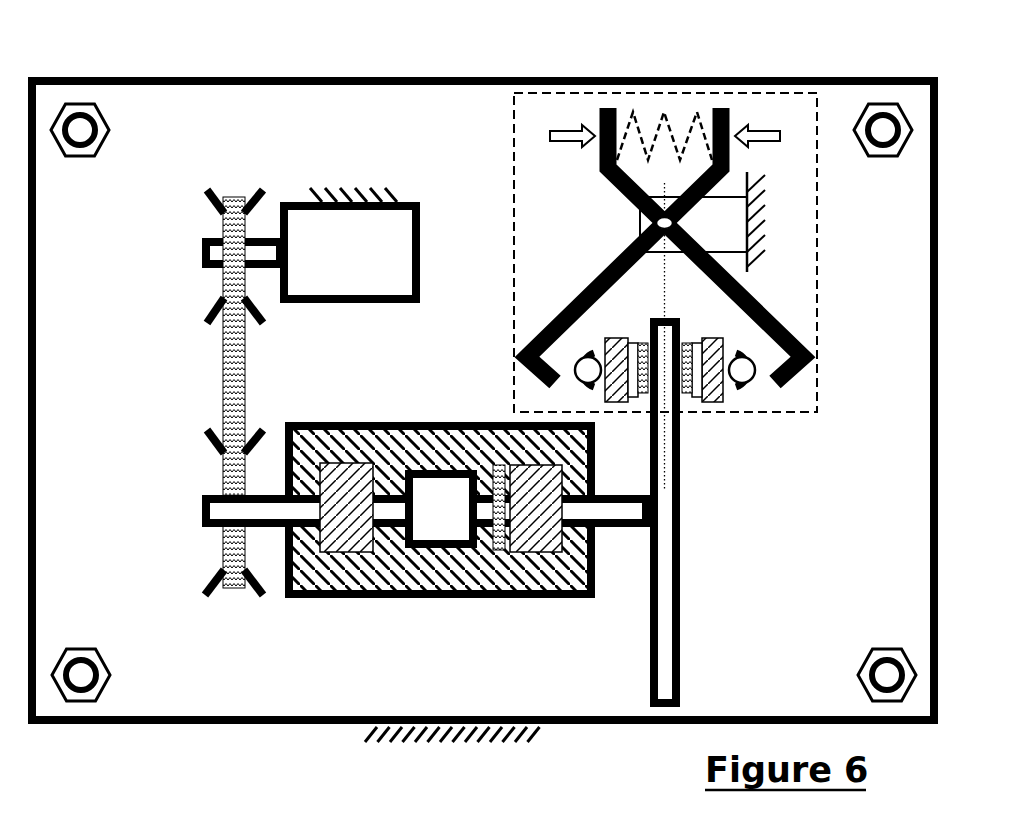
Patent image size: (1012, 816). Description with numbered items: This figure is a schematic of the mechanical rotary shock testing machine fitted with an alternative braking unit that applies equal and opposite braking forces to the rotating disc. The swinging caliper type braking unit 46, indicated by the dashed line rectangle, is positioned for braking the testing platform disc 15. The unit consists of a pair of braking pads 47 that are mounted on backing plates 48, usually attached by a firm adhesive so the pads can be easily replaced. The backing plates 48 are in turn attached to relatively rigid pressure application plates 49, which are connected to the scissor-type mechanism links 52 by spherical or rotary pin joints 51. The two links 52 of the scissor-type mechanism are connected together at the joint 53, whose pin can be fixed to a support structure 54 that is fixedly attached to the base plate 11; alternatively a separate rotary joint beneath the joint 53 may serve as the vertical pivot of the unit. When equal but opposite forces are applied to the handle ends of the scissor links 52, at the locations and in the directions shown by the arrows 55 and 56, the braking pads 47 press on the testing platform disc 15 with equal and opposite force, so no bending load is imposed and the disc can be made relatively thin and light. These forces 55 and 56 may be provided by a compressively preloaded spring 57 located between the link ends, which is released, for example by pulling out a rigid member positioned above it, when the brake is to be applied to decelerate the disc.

The base plate 11 is at (213, 125).
The testing platform disc 15 is at (637, 672).
The swinging caliper type braking unit 46 is at (500, 190).
The braking pads 47 is at (682, 400).
The backing plates 48 is at (695, 370).
The pressure application plates 49 is at (711, 378).
The spherical or rotary (pin) joints 51 is at (742, 370).
The scissor-type mechanism links 52 is at (780, 325).
The joint 53 is at (665, 187).
The support structure 54 is at (722, 224).
The force arrow 55 is at (563, 118).
The force arrow 56 is at (767, 117).
The compressively preloaded spring 57 is at (672, 122).